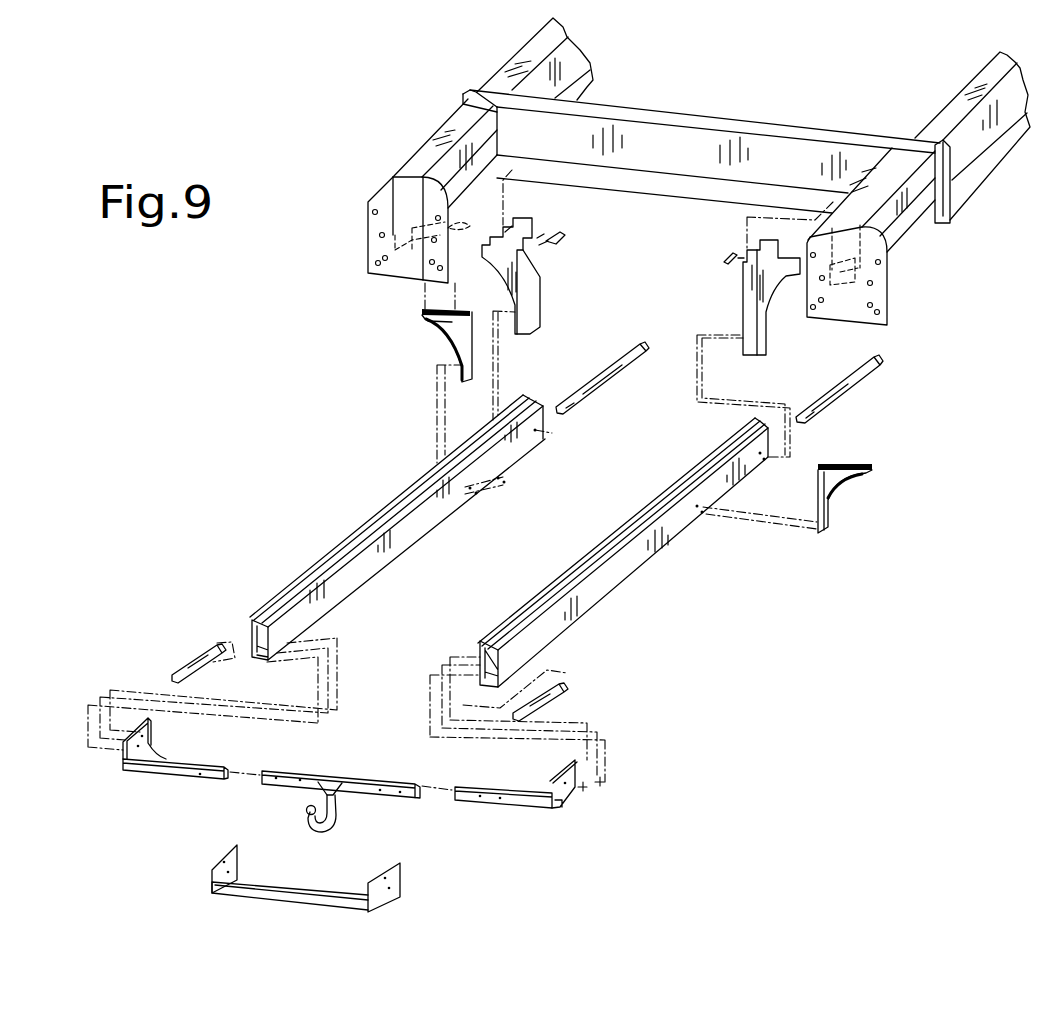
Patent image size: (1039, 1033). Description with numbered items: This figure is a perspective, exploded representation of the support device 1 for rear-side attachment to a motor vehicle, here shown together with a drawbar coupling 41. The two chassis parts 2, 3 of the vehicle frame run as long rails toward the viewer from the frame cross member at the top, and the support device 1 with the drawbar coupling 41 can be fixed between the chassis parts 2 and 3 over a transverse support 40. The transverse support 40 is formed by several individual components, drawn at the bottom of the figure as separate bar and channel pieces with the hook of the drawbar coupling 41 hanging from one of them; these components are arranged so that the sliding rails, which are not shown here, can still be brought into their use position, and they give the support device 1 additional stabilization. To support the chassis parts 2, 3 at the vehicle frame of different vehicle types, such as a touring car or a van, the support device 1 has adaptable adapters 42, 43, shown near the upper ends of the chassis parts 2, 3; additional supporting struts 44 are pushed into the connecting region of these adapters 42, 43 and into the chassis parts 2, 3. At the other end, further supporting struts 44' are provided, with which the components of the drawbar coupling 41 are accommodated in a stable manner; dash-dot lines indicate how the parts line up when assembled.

The support device 1 is at (317, 368).
The chassis part 2 is at (638, 590).
The chassis part 3 is at (308, 517).
The transverse support 40 is at (190, 787).
The drawbar coupling 41 is at (348, 828).
The adapter 42 is at (423, 339).
The adapter 43 is at (549, 282).
The supporting strut 44 is at (732, 382).
The supporting strut 44' is at (391, 655).